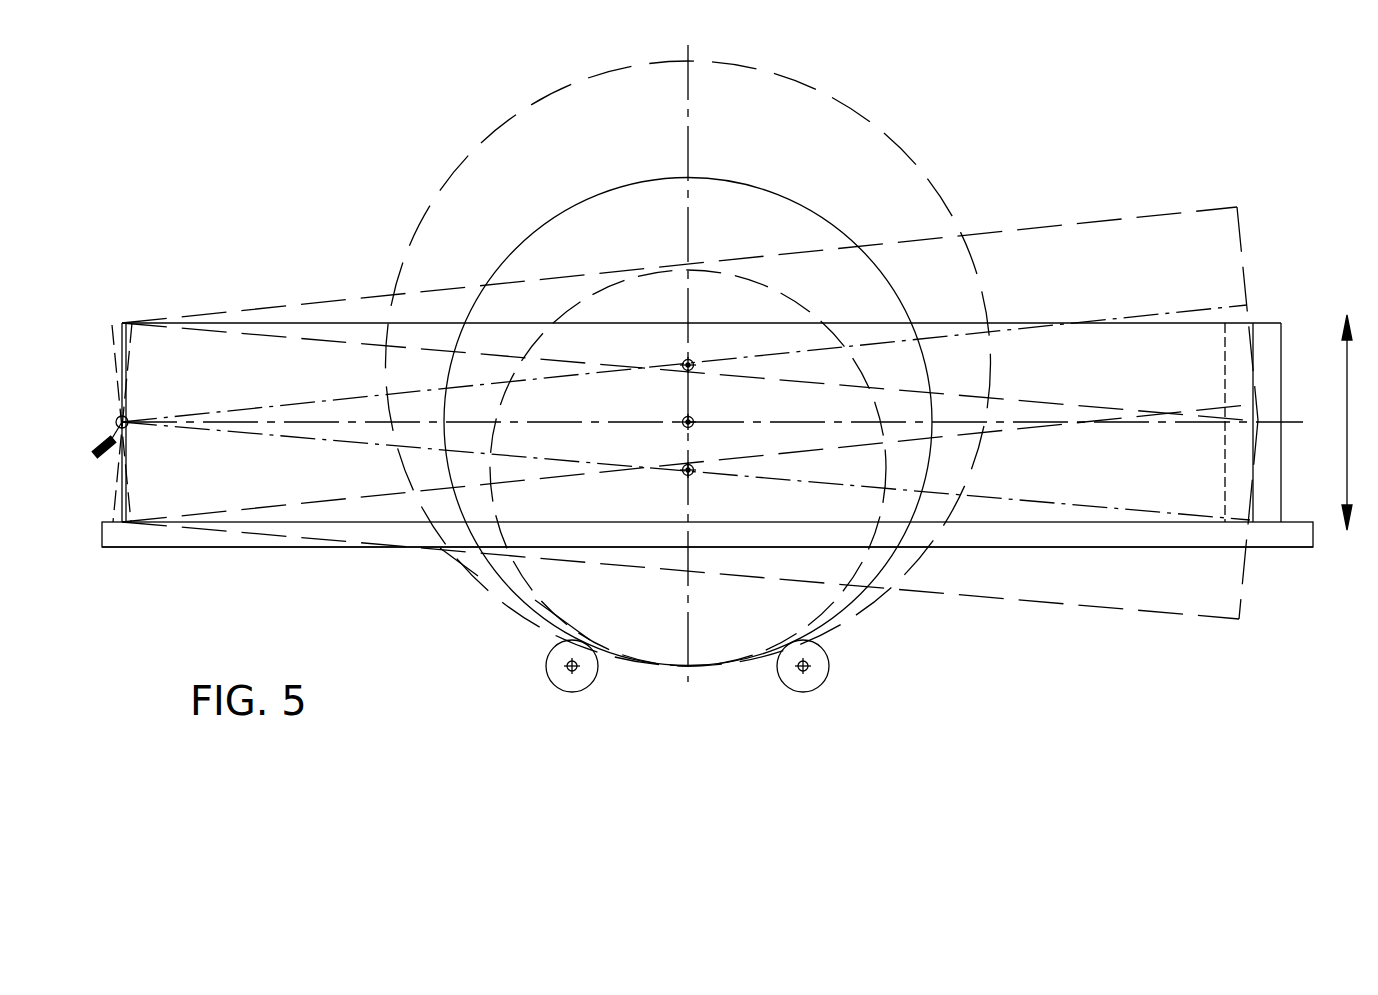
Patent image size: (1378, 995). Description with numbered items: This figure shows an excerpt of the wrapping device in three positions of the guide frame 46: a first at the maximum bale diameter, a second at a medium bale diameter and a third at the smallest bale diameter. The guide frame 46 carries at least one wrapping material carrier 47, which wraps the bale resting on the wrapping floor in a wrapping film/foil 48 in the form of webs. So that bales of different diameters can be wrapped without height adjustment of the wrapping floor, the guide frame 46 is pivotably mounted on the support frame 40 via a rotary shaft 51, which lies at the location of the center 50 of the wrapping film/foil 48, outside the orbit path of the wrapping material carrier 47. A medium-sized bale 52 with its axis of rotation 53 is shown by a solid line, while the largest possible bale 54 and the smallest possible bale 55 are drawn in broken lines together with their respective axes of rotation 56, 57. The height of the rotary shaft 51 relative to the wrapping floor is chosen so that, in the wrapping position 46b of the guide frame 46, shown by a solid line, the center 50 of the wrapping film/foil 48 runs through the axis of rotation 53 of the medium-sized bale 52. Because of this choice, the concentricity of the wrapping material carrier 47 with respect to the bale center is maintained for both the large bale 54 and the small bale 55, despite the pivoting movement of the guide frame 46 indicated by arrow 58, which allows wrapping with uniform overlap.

The support frame 40 is at (113, 440).
The guide frame 46 is at (1272, 535).
The wrapping position of the guide frame 46b is at (1250, 551).
The wrapping material carrier 47 is at (1263, 466).
The wrapping film/foil 48 is at (1153, 323).
The center of the wrapping film/foil 50 is at (1303, 422).
The rotary shaft 51 is at (121, 418).
The medium-sized bale 52 is at (513, 591).
The axis of rotation of the medium-sized bale 53 is at (690, 428).
The largest possible bale 54 is at (459, 562).
The smallest possible bale 55 is at (560, 618).
The axis of rotation of the largest bale 56 is at (690, 371).
The axis of rotation of the smallest bale 57 is at (690, 476).
The arrow 58 is at (1347, 423).